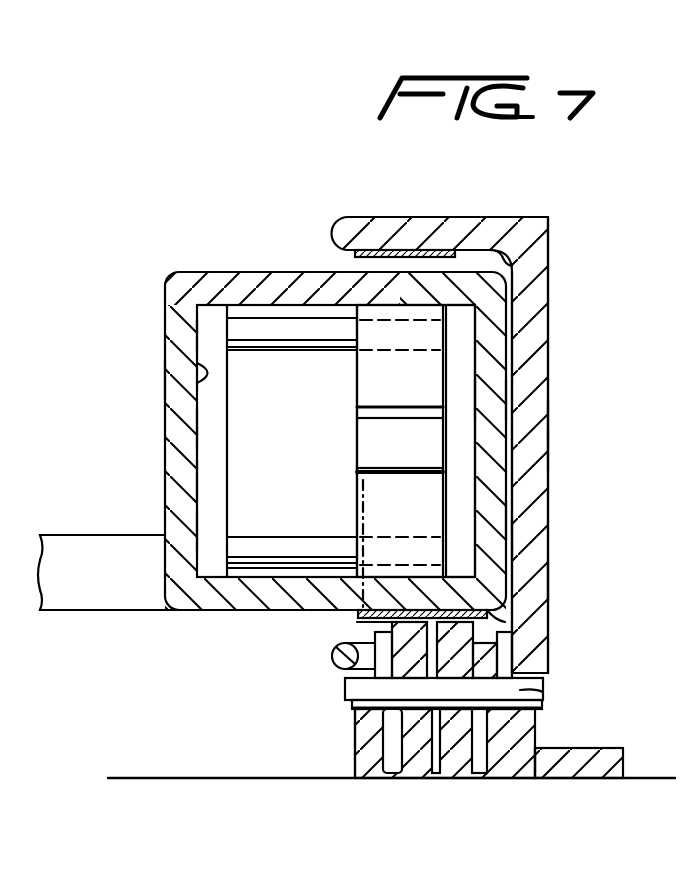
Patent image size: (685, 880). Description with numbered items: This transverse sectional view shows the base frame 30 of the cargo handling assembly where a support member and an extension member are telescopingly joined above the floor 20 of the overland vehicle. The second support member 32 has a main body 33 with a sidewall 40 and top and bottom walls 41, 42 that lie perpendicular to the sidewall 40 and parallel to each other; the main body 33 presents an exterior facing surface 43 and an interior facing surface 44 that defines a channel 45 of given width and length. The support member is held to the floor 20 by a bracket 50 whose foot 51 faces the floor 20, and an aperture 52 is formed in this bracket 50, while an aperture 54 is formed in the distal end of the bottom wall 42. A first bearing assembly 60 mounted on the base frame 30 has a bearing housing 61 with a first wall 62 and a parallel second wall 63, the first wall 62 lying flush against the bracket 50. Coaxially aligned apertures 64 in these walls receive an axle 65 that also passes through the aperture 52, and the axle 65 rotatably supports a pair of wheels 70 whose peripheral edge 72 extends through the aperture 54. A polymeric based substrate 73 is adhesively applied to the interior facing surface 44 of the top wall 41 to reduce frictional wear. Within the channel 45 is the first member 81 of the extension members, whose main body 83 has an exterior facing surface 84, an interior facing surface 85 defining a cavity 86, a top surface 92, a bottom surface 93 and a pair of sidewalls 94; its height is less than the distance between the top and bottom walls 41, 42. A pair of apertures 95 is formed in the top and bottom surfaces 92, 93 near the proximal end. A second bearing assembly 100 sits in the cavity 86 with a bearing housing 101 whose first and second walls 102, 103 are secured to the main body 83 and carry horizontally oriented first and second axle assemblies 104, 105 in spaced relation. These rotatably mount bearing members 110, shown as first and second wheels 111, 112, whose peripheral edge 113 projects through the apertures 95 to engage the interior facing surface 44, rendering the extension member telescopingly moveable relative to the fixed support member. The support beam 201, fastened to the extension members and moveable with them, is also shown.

The floor 20 is at (165, 778).
The base frame 30 is at (502, 422).
The second support member 32 is at (544, 425).
The main body 33 is at (525, 540).
The sidewall 40 is at (548, 578).
The top wall 41 is at (420, 217).
The bottom wall 42 is at (535, 668).
The exterior facing surface 43 is at (549, 450).
The interior facing surface 44 is at (498, 248).
The channel 45 is at (476, 257).
The bracket 50 is at (556, 762).
The foot 51 is at (560, 778).
The aperture 52 is at (532, 705).
The aperture 54 is at (358, 640).
The first bearing assembly 60 is at (472, 781).
The bearing housing 61 is at (363, 730).
The first wall 62 is at (485, 778).
The second wall 63 is at (380, 778).
The coaxially aligned apertures 64 is at (370, 692).
The axle 65 is at (372, 705).
The wheels 70 is at (452, 778).
The peripheral edge 72 is at (506, 614).
The polymeric based substrate 73 is at (372, 250).
The first member 81 is at (218, 262).
The main body 83 is at (498, 395).
The exterior facing surface 84 is at (242, 272).
The interior facing surface 85 is at (193, 367).
The cavity 86 is at (203, 478).
The top surface 92 is at (283, 272).
The bottom surface 93 is at (233, 612).
The sidewalls 94 is at (168, 393).
The apertures 95 is at (356, 262).
The second bearing assembly 100 is at (291, 441).
The bearing housing 101 is at (208, 338).
The first wall 102 is at (460, 465).
The second wall 103 is at (208, 430).
The first axle assembly 104 is at (297, 340).
The second axle assembly 105 is at (245, 528).
The bearing members 110 is at (362, 441).
The first wheel 111 is at (400, 361).
The second wheel 112 is at (400, 522).
The peripheral edge 113 is at (413, 467).
The support beam 201 is at (105, 590).